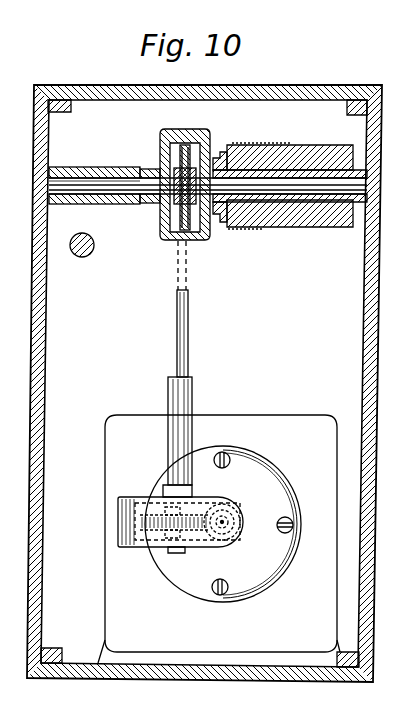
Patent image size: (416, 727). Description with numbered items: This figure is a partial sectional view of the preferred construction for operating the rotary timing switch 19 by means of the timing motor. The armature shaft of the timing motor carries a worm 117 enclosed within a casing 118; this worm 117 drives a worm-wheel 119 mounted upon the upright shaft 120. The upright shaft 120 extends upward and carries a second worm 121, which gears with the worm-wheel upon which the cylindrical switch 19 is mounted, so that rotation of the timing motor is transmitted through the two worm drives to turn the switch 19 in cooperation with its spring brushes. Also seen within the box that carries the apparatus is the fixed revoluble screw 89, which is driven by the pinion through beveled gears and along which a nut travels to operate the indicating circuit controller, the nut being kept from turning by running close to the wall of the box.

The rotary timing switch 19 is at (290, 190).
The worm 121 is at (148, 202).
The fixed revoluble screw 89 is at (88, 258).
The upright shaft 120 is at (199, 363).
The casing 118 is at (153, 556).
The worm-wheel 119 is at (153, 523).
The worm 117 is at (235, 517).